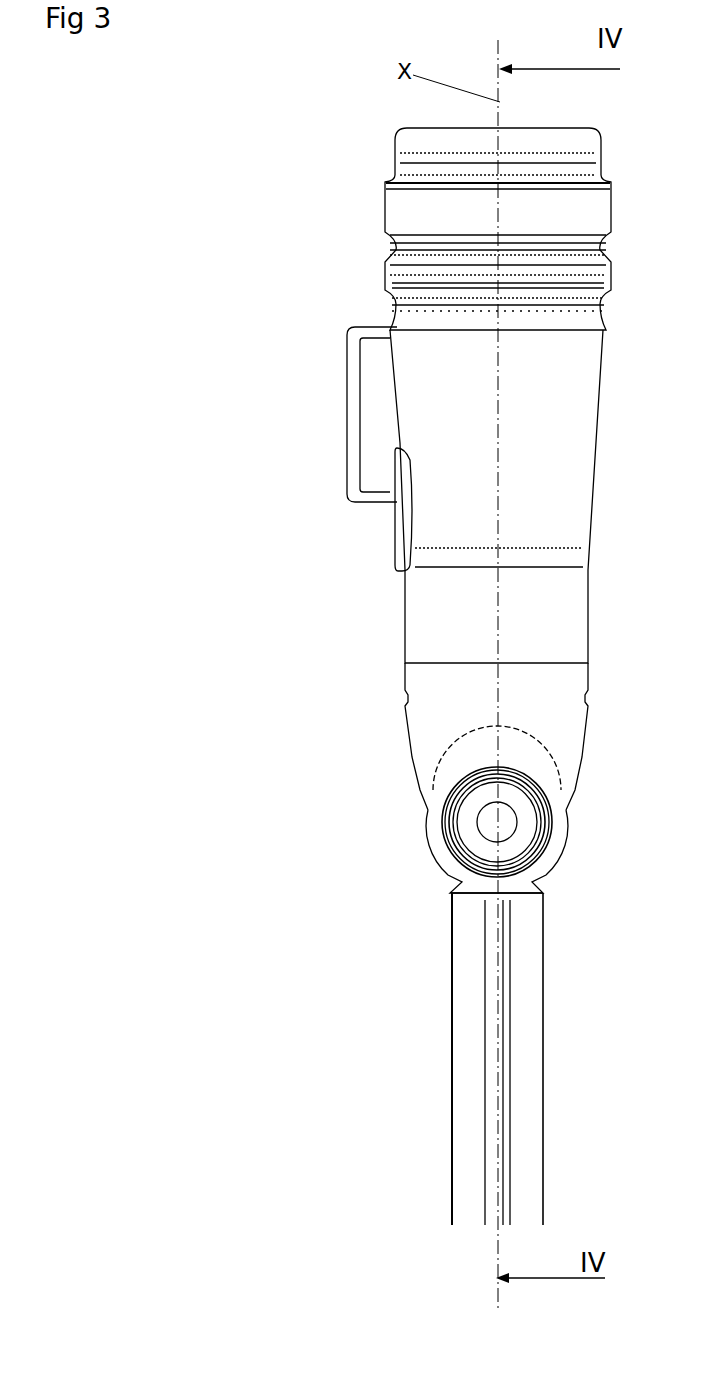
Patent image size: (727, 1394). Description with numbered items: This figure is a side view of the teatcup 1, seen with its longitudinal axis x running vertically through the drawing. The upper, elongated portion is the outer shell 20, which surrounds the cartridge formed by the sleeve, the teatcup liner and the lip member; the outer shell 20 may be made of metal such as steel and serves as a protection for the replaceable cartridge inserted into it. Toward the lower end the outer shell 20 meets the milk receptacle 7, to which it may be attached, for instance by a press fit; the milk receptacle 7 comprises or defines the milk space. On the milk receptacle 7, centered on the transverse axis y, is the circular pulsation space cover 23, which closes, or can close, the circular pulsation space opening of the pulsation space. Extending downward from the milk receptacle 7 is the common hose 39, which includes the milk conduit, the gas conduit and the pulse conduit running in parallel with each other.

The teatcup 1 is at (330, 254).
The outer shell 20 is at (437, 388).
The milk receptacle 7 is at (440, 706).
The pulsation space cover 23 is at (437, 814).
The common hose 39 is at (465, 1005).